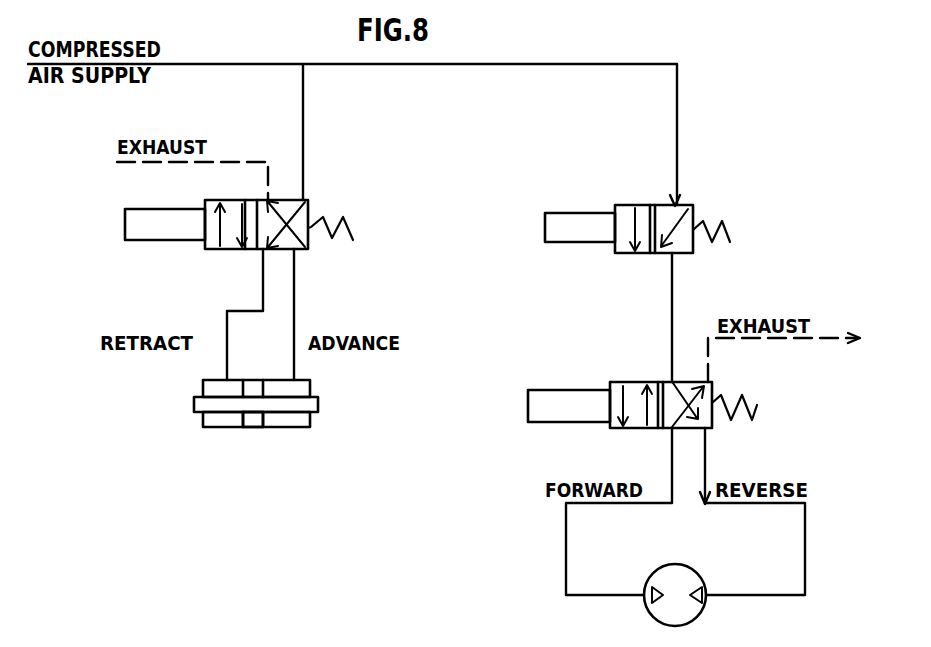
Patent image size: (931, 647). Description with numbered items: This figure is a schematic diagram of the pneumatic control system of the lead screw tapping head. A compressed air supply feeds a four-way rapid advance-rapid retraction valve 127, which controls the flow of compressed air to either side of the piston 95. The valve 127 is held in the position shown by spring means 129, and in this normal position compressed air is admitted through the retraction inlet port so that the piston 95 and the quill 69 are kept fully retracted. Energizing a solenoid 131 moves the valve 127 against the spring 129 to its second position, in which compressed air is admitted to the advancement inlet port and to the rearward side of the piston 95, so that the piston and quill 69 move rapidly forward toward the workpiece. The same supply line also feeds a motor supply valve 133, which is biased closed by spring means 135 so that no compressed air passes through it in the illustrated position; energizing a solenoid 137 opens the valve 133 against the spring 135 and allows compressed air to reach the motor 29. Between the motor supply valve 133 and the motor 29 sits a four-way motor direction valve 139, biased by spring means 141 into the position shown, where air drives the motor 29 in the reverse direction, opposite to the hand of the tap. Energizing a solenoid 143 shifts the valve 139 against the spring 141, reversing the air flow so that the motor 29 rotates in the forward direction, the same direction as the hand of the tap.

The motor 29 is at (658, 613).
The quill 69 is at (203, 382).
The piston 95 is at (256, 420).
The four-way rapid advance-rapid retraction valve 127 is at (305, 201).
The spring means 129 is at (337, 217).
The solenoid 131 is at (145, 228).
The motor supply valve 133 is at (690, 208).
The spring means 135 is at (723, 229).
The solenoid 137 is at (568, 225).
The four-way motor direction valve 139 is at (683, 383).
The spring means 141 is at (755, 405).
The solenoid 143 is at (558, 397).